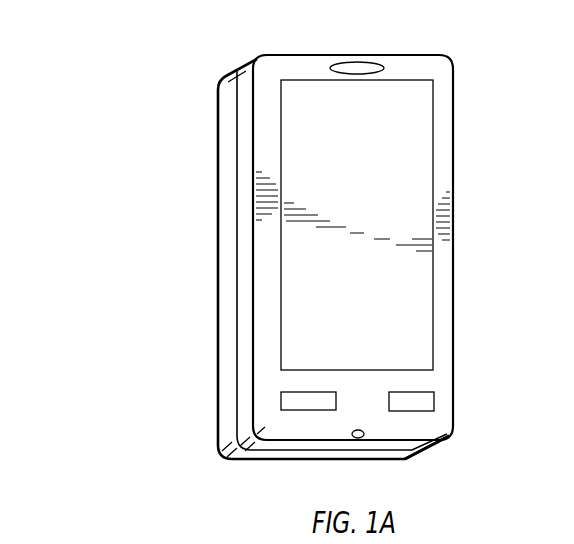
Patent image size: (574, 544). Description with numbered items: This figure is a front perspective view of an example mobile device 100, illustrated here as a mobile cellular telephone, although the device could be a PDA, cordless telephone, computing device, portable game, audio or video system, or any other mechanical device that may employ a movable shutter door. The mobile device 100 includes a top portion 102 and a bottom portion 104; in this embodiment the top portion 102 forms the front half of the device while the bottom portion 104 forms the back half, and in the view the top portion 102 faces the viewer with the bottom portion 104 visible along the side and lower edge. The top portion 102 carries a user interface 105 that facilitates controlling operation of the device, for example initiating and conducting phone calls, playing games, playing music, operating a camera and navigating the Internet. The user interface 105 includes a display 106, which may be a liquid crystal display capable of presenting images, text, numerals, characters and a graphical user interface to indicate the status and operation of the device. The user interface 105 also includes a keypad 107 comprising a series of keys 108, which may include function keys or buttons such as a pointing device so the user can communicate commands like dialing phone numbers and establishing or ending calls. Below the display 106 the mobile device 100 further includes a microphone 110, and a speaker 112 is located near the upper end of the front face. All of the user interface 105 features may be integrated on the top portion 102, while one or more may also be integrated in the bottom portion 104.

The mobile device 100 is at (282, 256).
The top portion 102 is at (240, 82).
The bottom portion 104 is at (228, 160).
The user interface 105 is at (266, 280).
The display 106 is at (418, 127).
The keypad 107 is at (440, 437).
The keys 108 is at (280, 402).
The microphone 110 is at (351, 436).
The speaker 112 is at (372, 62).